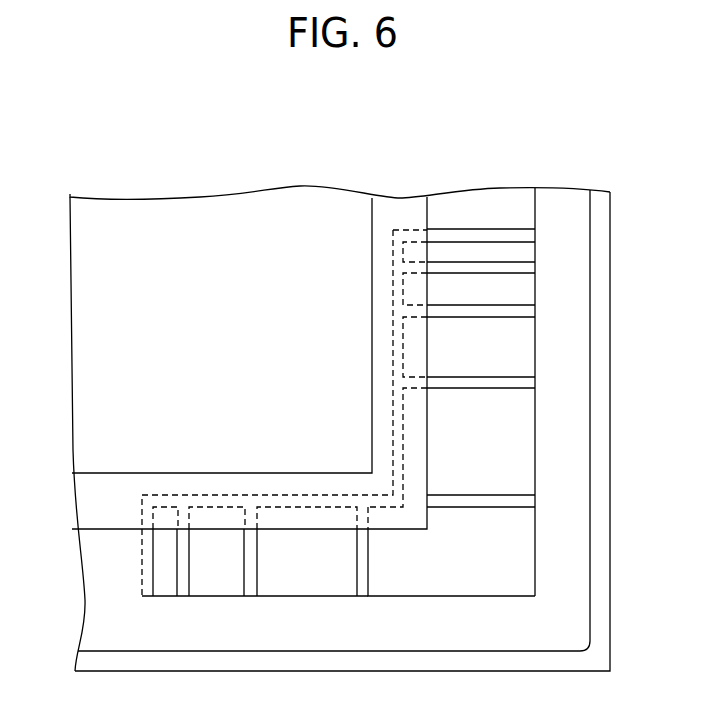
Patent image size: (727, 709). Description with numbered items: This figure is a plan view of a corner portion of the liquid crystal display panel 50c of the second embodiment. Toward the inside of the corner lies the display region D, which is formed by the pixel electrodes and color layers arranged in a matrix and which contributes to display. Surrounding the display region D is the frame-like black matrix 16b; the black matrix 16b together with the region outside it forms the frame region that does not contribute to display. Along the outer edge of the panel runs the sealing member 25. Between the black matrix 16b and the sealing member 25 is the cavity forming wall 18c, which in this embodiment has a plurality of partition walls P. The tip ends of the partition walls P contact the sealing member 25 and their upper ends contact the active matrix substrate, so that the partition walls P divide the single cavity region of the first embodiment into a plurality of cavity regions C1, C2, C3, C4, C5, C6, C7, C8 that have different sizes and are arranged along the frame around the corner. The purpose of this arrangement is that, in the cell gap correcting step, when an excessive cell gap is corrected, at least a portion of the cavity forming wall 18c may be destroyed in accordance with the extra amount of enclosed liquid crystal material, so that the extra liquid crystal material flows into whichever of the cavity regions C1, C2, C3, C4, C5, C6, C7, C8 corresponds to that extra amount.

The liquid crystal display panel 50c is at (112, 176).
The sealing member 25 is at (565, 198).
The black matrix 16b is at (397, 212).
The cavity forming wall 18c is at (494, 233).
The display region D is at (222, 335).
The partition walls P is at (403, 389).
The cavity region C1 is at (167, 586).
The cavity region C2 is at (217, 551).
The cavity region C3 is at (255, 551).
The cavity region C4 is at (451, 551).
The cavity region C5 is at (481, 468).
The cavity region C6 is at (469, 347).
The cavity region C7 is at (469, 289).
The cavity region C8 is at (527, 247).